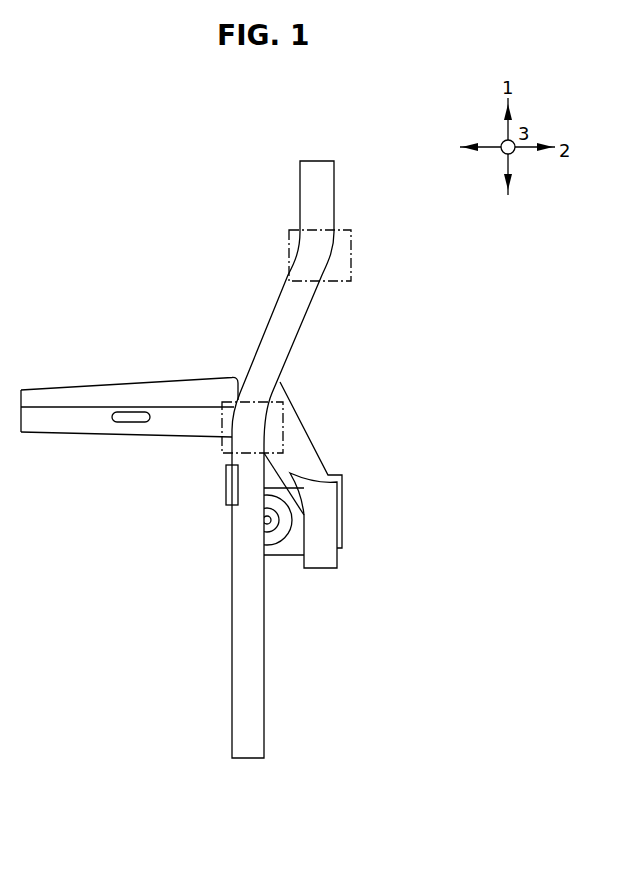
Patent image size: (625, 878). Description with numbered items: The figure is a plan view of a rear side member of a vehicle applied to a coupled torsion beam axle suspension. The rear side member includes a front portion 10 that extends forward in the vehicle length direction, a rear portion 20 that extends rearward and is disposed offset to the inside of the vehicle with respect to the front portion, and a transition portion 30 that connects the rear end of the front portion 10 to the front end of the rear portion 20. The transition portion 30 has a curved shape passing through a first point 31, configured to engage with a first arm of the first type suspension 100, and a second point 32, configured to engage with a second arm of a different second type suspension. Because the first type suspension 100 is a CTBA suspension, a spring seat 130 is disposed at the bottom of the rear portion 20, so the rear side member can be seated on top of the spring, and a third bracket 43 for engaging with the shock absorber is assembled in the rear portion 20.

The front portion 10 is at (393, 152).
The rear portion 20 is at (393, 462).
The transition portion 30 is at (393, 233).
The first point 31 is at (289, 258).
The second point 32 is at (222, 426).
The third bracket 43 is at (218, 499).
The first type suspension 100 is at (87, 398).
The spring seat 130 is at (275, 545).